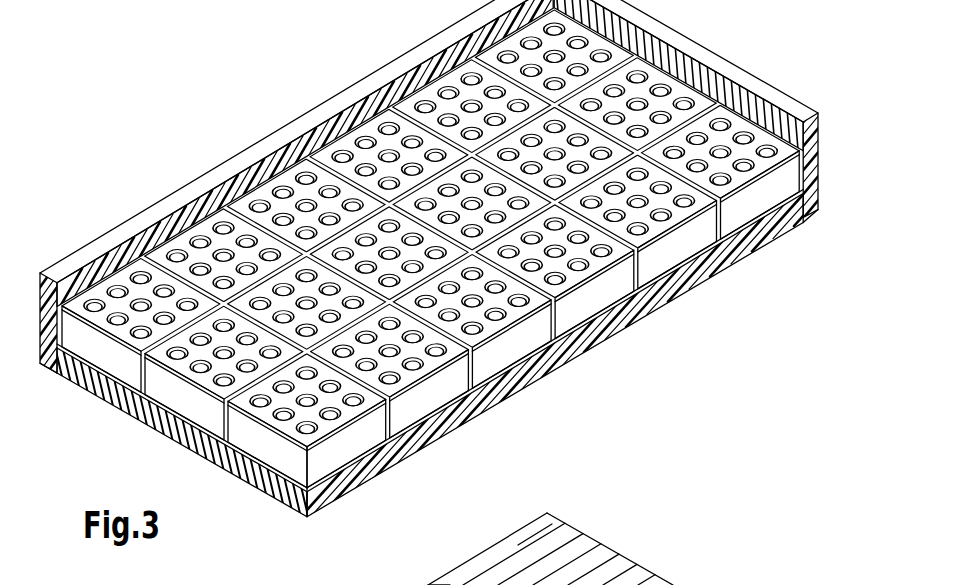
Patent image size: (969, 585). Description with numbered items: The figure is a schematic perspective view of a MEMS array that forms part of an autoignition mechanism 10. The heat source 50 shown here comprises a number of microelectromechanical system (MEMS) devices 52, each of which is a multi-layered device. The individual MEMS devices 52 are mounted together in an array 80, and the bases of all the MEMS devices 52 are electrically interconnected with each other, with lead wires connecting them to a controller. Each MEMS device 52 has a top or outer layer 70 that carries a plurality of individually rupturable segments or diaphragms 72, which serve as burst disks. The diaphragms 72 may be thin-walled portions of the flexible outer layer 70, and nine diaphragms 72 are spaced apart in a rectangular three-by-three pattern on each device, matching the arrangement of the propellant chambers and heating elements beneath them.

The tray assembly 10 is at (443, 288).
The heat source 50 is at (139, 464).
The MEMS device 52 is at (345, 143).
The array 80 is at (251, 511).
The outer layer 70 is at (648, 575).
The diaphragm 72 is at (436, 584).